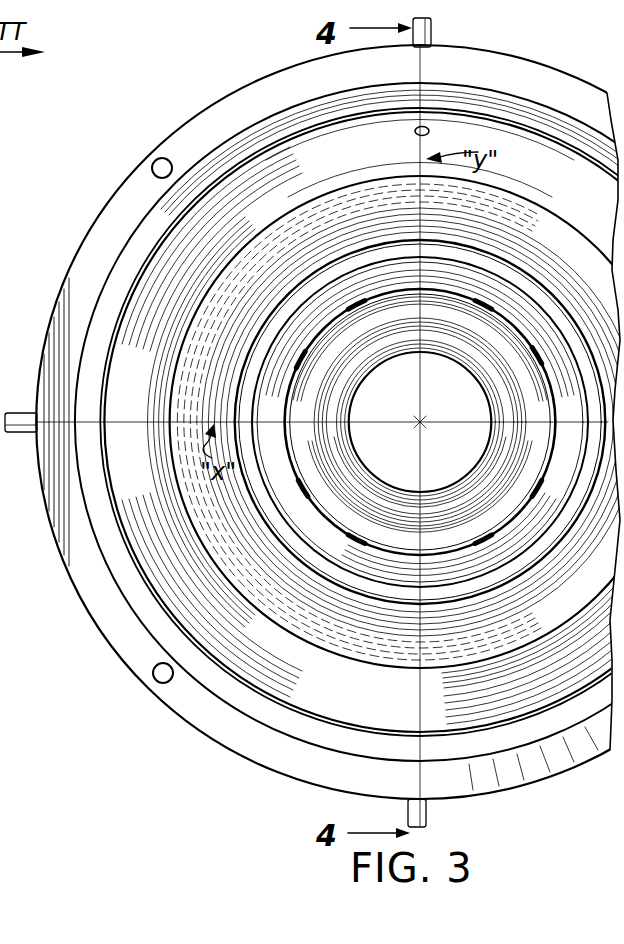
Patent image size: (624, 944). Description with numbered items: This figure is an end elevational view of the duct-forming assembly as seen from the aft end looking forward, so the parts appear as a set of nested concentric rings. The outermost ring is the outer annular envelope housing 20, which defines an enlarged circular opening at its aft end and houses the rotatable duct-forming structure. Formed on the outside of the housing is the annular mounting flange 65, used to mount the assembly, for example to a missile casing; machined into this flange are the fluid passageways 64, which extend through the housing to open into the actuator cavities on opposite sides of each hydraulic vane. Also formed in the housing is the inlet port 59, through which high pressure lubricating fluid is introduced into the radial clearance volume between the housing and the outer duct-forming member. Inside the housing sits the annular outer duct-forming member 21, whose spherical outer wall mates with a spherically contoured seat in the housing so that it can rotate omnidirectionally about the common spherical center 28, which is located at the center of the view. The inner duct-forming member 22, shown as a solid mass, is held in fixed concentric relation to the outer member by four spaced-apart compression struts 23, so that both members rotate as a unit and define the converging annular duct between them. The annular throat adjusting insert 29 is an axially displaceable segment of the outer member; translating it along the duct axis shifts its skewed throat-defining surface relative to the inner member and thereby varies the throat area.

The outer annular envelope housing 20 is at (222, 752).
The annular outer duct-forming member 21 is at (219, 403).
The inner duct-forming member 22 is at (346, 487).
The compression struts 23 is at (356, 305).
The spherical center 28 is at (408, 418).
The annular throat adjusting insert 29 is at (324, 548).
The inlet port 59 is at (414, 131).
The fluid passageways 64 is at (432, 32).
The annular mounting flange 65 is at (96, 224).